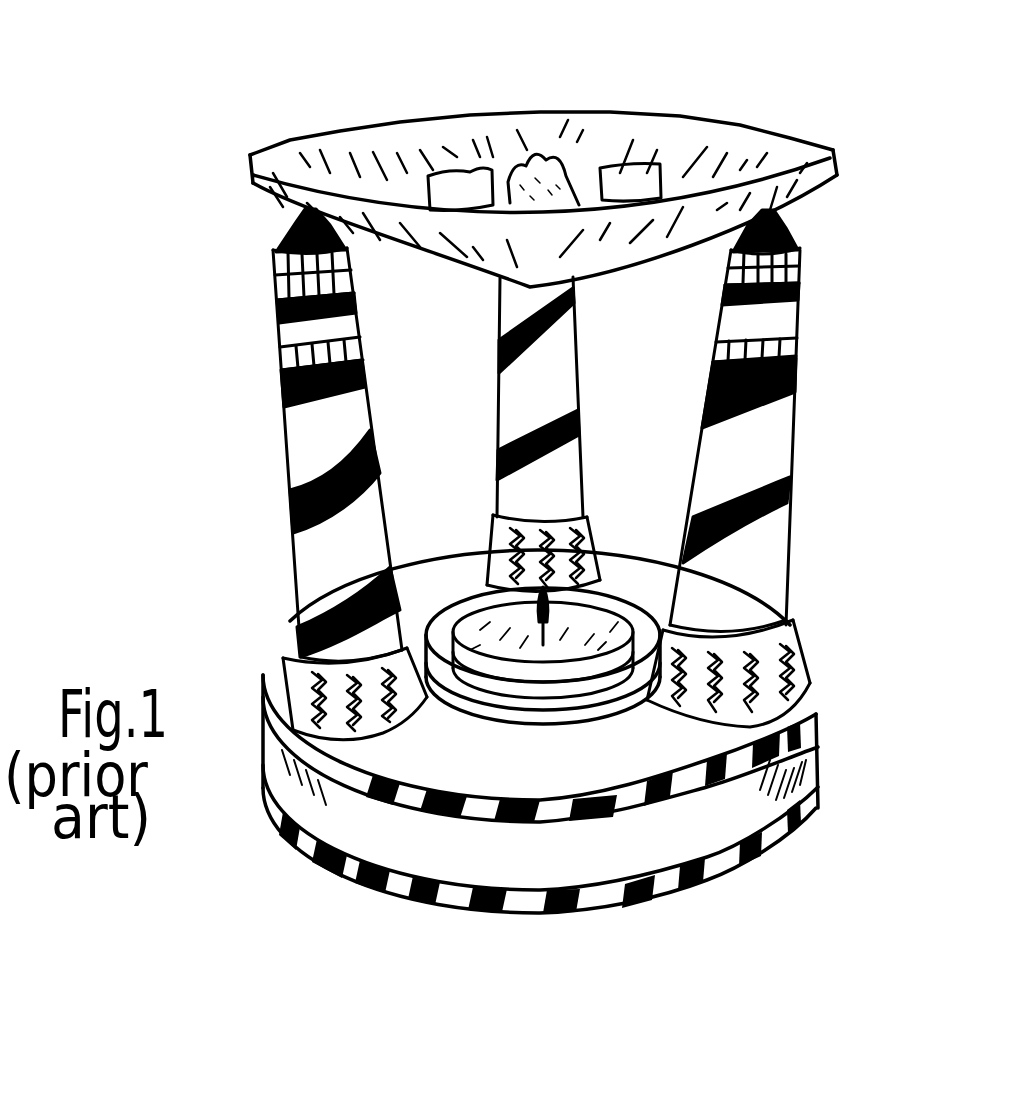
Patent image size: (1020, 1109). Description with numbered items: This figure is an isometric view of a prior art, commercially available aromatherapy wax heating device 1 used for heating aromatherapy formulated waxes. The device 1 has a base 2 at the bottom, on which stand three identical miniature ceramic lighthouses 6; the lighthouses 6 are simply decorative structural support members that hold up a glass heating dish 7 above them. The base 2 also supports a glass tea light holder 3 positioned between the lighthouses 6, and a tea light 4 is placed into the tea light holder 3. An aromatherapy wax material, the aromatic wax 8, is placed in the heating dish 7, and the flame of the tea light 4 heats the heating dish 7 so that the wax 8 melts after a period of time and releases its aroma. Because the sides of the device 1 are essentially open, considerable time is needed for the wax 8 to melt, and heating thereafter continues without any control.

The aromatherapy wax heating device 1 is at (243, 451).
The base 2 is at (820, 758).
The glass tea light holder 3 is at (500, 720).
The tea light 4 is at (590, 635).
The miniature ceramic lighthouses 6 is at (703, 437).
The glass heating dish 7 is at (253, 182).
The aromatic wax 8 is at (617, 167).